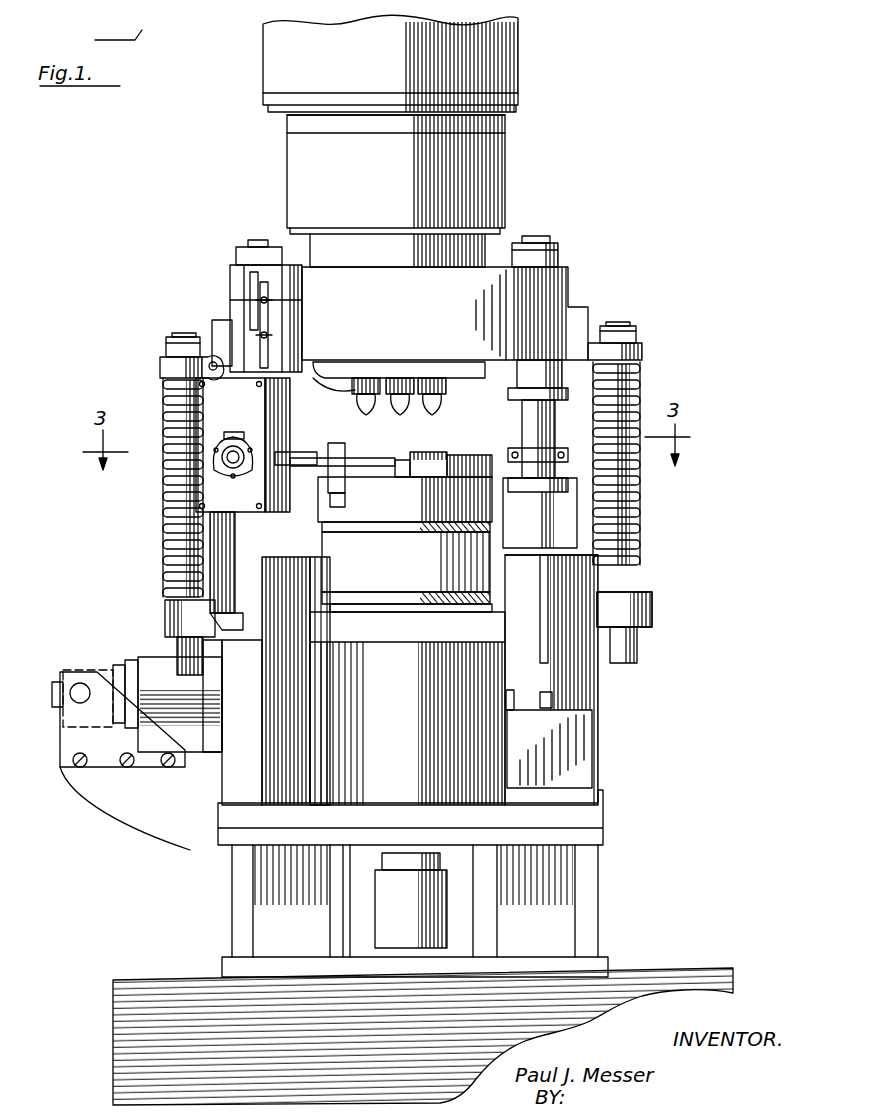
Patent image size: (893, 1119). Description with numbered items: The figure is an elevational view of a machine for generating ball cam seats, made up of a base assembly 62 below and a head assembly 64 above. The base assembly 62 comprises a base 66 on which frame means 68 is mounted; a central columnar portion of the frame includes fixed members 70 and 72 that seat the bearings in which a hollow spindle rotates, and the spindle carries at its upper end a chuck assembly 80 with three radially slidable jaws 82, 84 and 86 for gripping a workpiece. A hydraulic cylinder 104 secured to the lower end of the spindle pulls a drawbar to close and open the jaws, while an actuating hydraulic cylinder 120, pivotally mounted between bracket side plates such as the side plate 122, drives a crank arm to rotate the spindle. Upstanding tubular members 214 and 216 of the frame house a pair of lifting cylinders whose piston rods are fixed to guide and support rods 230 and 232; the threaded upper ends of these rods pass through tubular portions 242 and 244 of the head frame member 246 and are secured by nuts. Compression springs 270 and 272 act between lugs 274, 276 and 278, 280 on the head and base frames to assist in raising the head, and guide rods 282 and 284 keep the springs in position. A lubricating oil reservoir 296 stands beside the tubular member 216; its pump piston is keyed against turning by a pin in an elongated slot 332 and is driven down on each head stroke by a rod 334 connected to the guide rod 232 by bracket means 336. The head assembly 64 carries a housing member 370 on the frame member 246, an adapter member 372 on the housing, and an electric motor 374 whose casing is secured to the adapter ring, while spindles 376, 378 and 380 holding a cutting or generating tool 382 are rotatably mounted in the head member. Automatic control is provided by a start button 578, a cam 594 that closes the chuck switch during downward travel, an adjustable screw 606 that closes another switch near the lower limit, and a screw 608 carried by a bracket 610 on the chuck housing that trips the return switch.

The base assembly 62 is at (215, 897).
The head assembly 64 is at (218, 297).
The base 66 is at (225, 935).
The frame means 68 is at (210, 737).
The fixed member 70 is at (492, 778).
The fixed member 72 is at (425, 640).
The chuck assembly 80 is at (468, 449).
The jaw 82 is at (462, 452).
The jaw 84 is at (412, 460).
The jaw 86 is at (365, 465).
The hydraulic cylinder 104 is at (440, 916).
The actuating hydraulic cylinder 120 is at (152, 660).
The side plate 122 is at (73, 745).
The tubular member 214 is at (232, 800).
The tubular member 216 is at (594, 695).
The guide and support rod 230 is at (280, 420).
The guide and support rod 232 is at (528, 428).
The tubular portion 242 is at (236, 270).
The tubular portion 244 is at (545, 272).
The head frame member 246 is at (494, 266).
The compression spring 270 is at (168, 512).
The compression spring 272 is at (642, 503).
The lug 274 is at (162, 364).
The lug 276 is at (168, 600).
The lug 278 is at (622, 352).
The lug 280 is at (652, 610).
The guide rod 282 is at (172, 648).
The guide rod 284 is at (638, 650).
The lubricating oil reservoir 296 is at (585, 736).
The elongated slot 332 is at (550, 698).
The rod 334 is at (546, 612).
The bracket means 336 is at (564, 473).
The housing member 370 is at (490, 172).
The adapter member 372 is at (275, 106).
The electric motor 374 is at (520, 52).
The spindle 376 is at (405, 378).
The spindle 378 is at (455, 378).
The spindle 380 is at (332, 372).
The cutting or generating tool 382 is at (356, 405).
The start button 578 is at (214, 466).
The cam 594 is at (258, 328).
The adjustable screw 606 is at (230, 300).
The screw 608 is at (338, 456).
The bracket 610 is at (342, 500).